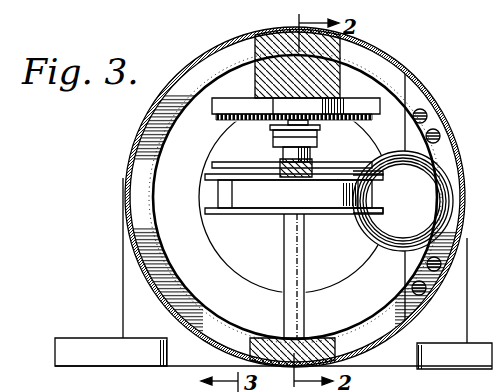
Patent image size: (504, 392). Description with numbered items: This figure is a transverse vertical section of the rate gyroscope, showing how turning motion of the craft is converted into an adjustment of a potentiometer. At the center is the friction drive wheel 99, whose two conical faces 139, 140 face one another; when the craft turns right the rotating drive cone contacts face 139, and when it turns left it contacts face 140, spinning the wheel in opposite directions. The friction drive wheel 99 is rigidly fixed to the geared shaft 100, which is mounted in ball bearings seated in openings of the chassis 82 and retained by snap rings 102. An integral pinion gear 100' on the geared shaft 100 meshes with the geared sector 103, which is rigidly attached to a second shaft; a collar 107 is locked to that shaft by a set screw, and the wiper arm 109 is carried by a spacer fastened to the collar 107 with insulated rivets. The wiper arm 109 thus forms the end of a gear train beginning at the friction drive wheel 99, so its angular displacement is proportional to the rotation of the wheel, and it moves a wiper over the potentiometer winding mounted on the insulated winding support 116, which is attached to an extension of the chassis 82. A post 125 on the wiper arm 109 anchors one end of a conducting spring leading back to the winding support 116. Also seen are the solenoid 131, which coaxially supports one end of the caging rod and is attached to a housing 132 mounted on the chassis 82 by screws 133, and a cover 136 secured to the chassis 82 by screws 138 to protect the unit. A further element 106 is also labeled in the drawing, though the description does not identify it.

The chassis 82 is at (118, 267).
The friction drive wheel 99 is at (258, 221).
The geared shaft 100 is at (274, 276).
The integral pinion gear 100' is at (295, 194).
The snap rings 102 is at (249, 361).
The geared sector 103 is at (361, 166).
The base plate 106 is at (273, 379).
The collar 107 is at (284, 153).
The wiper arm 109 is at (317, 138).
The insulated winding support 116 is at (372, 106).
The post 125 is at (342, 46).
The solenoid 131 is at (403, 201).
The housing 132 is at (448, 153).
The screws 133 is at (428, 117).
The cover 136 is at (193, 66).
The screws 138 is at (140, 288).
The face 139 is at (206, 211).
The face 140 is at (206, 180).